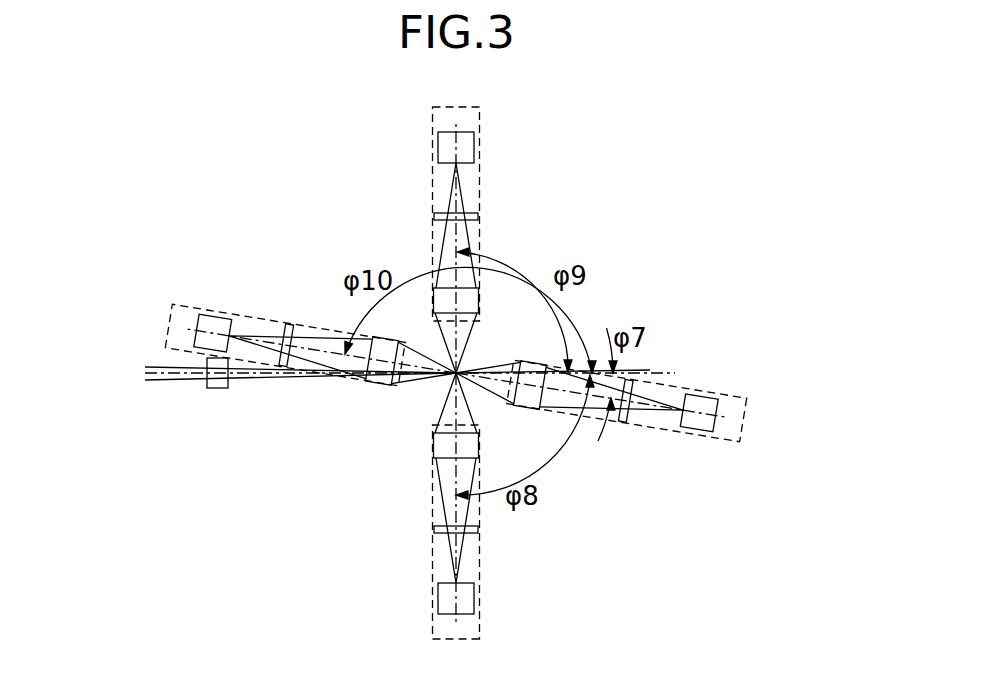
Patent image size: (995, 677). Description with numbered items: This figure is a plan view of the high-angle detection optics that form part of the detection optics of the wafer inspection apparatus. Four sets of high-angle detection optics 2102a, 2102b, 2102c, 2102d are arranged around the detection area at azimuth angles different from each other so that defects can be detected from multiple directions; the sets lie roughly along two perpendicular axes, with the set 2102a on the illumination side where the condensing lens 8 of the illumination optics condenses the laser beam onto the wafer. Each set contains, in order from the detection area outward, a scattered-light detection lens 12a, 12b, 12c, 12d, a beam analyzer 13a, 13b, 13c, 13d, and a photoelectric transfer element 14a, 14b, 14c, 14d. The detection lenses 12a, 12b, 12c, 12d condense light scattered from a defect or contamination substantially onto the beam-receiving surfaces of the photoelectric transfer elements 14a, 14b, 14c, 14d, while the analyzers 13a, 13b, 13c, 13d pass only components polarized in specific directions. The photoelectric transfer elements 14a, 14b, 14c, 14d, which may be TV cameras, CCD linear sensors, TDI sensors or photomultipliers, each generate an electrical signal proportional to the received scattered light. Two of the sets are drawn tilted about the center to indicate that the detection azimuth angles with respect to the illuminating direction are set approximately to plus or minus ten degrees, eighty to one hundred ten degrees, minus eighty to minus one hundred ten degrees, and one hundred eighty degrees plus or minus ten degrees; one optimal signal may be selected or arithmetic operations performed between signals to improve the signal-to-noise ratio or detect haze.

The condensing lens 8 is at (217, 389).
The scattered-light detection lens 12a is at (378, 384).
The scattered-light detection lens 12b is at (435, 450).
The scattered-light detection lens 12c is at (528, 407).
The scattered-light detection lens 12d is at (445, 287).
The beam analyzer 13a is at (286, 327).
The beam analyzer 13b is at (436, 530).
The beam analyzer 13c is at (625, 421).
The beam analyzer 13d is at (478, 216).
The photoelectric transfer element 14a is at (208, 314).
The photoelectric transfer element 14b is at (442, 599).
The photoelectric transfer element 14c is at (697, 432).
The photoelectric transfer element 14d is at (474, 147).
The first optical unit 2102a is at (171, 324).
The second optical unit 2102b is at (483, 624).
The third optical unit 2102c is at (723, 394).
The fourth optical unit 2102d is at (431, 122).